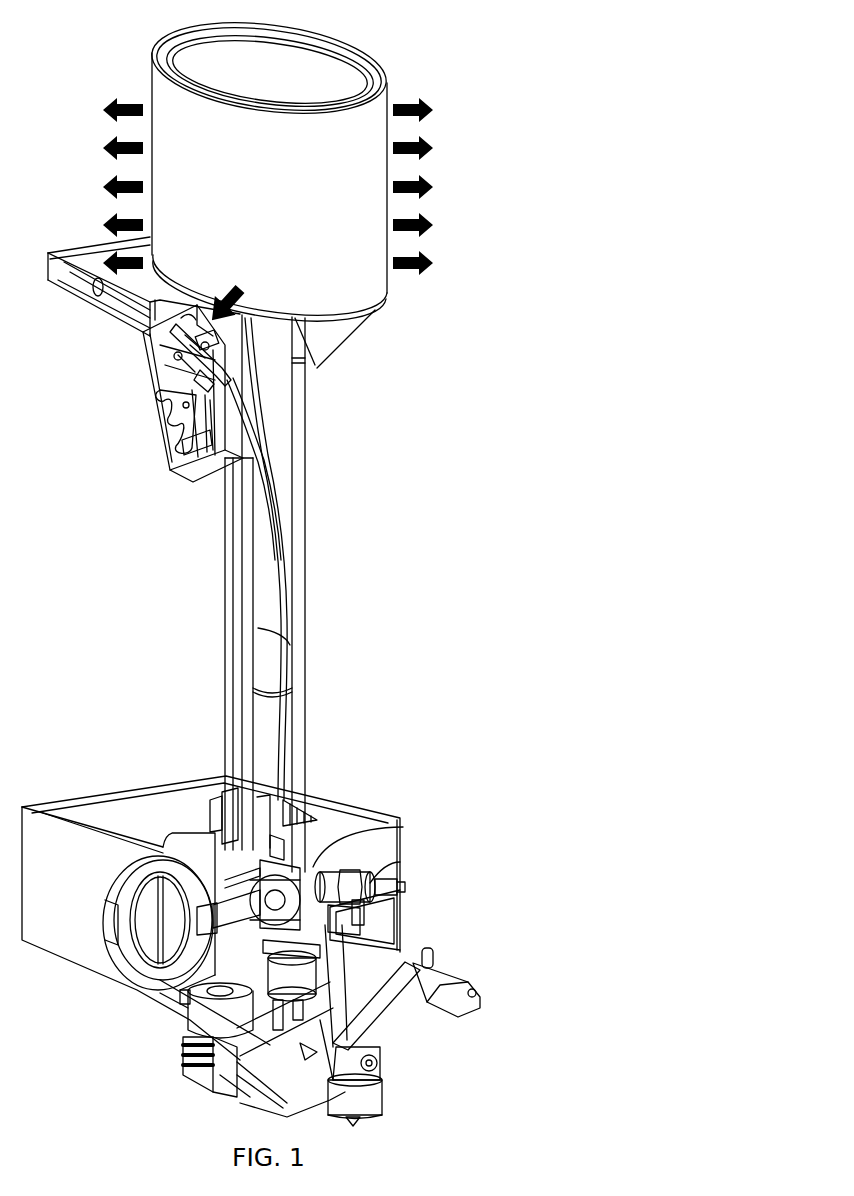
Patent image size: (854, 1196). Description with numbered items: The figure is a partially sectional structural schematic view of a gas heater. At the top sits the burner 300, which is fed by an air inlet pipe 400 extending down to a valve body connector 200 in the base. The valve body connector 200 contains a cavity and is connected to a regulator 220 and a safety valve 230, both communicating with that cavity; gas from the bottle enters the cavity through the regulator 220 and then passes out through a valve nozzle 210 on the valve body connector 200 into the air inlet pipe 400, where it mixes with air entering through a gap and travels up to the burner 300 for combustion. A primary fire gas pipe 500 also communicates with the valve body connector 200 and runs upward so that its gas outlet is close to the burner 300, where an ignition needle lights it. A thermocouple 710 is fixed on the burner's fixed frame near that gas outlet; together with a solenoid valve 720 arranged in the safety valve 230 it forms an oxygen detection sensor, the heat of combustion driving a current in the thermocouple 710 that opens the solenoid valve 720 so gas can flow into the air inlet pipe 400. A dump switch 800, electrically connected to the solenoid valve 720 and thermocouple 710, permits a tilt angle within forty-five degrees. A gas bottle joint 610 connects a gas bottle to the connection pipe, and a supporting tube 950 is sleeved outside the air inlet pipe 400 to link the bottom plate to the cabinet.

The burner 300 is at (388, 43).
The thermocouple 710 is at (173, 388).
The air inlet pipe 400 is at (295, 572).
The primary fire gas pipe 500 is at (247, 630).
The supporting tube 950 is at (307, 667).
The valve body connector 200 is at (403, 827).
The valve nozzle 210 is at (313, 790).
The solenoid valve 720 is at (353, 880).
The safety valve 230 is at (340, 915).
The regulator 220 is at (190, 988).
The dump switch 800 is at (183, 1058).
The gas bottle joint 610 is at (360, 1100).